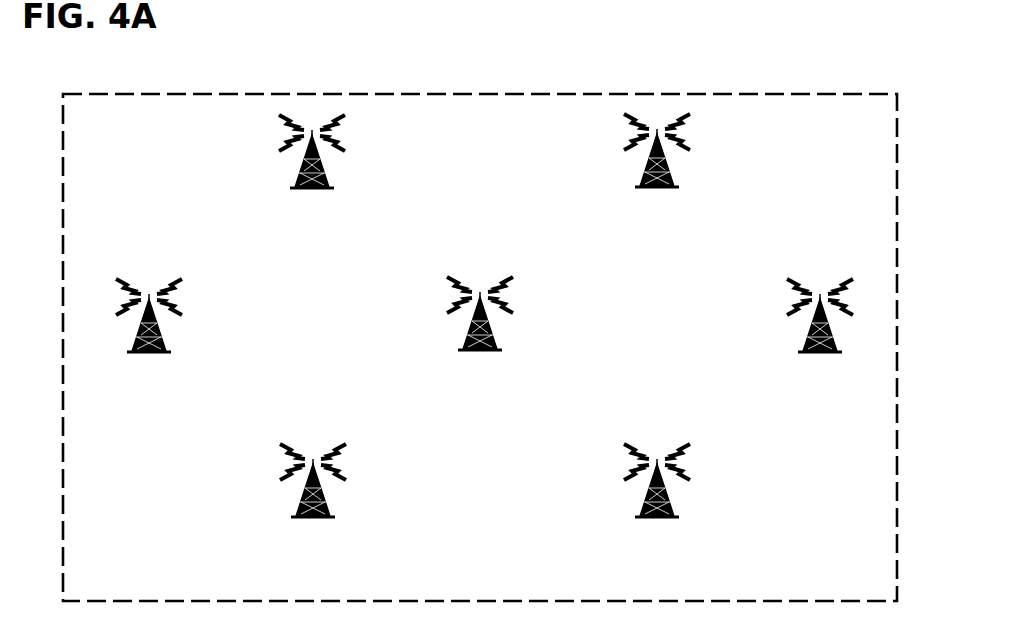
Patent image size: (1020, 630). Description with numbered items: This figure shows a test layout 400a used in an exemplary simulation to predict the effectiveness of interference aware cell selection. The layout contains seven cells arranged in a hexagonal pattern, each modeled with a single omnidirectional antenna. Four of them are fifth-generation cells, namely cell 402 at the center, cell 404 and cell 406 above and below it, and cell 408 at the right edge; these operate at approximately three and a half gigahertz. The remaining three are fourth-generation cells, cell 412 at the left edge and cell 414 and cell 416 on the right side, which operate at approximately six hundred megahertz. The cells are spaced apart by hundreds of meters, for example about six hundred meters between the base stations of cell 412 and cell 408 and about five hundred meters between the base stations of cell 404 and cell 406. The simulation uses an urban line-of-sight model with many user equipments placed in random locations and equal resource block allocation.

The test layout 400a is at (811, 65).
The cell 402 is at (480, 352).
The cell 404 is at (312, 190).
The cell 406 is at (313, 519).
The cell 408 is at (820, 354).
The cell 412 is at (149, 354).
The cell 414 is at (657, 189).
The cell 416 is at (657, 519).